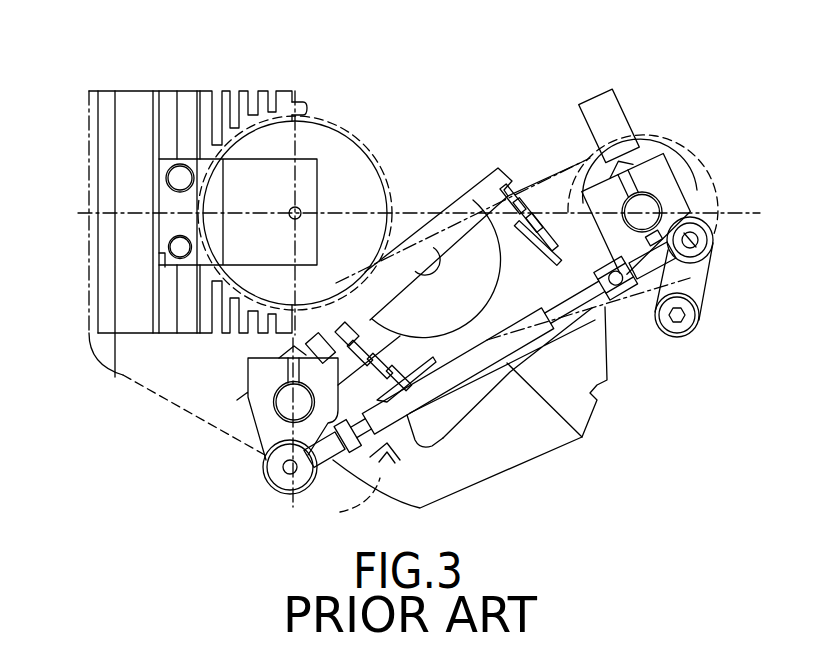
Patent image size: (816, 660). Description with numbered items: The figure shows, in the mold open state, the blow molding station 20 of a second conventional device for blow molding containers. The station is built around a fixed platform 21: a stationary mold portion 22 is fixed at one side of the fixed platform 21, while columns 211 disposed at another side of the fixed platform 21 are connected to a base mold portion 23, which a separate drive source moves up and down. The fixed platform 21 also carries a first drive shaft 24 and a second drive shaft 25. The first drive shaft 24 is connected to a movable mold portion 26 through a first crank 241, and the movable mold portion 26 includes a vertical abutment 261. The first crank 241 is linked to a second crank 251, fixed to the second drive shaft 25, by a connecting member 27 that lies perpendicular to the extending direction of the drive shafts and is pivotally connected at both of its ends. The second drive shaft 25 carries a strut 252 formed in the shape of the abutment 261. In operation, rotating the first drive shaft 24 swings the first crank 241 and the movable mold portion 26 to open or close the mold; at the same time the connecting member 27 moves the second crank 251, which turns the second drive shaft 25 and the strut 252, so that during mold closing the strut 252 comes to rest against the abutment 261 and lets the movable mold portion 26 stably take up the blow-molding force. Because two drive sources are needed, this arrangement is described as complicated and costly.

The blow molding station 20 is at (168, 80).
The fixed platform 21 is at (147, 383).
The stationary mold portion 22 is at (128, 115).
The base mold portion 23 is at (338, 158).
The columns 211 is at (177, 175).
The first drive shaft 24 is at (252, 440).
The first crank 241 is at (258, 390).
The second drive shaft 25 is at (650, 205).
The second crank 251 is at (605, 195).
The strut 252 is at (610, 117).
The movable mold portion 26 is at (493, 180).
The vertical abutment 261 is at (603, 387).
The connecting member 27 is at (478, 365).